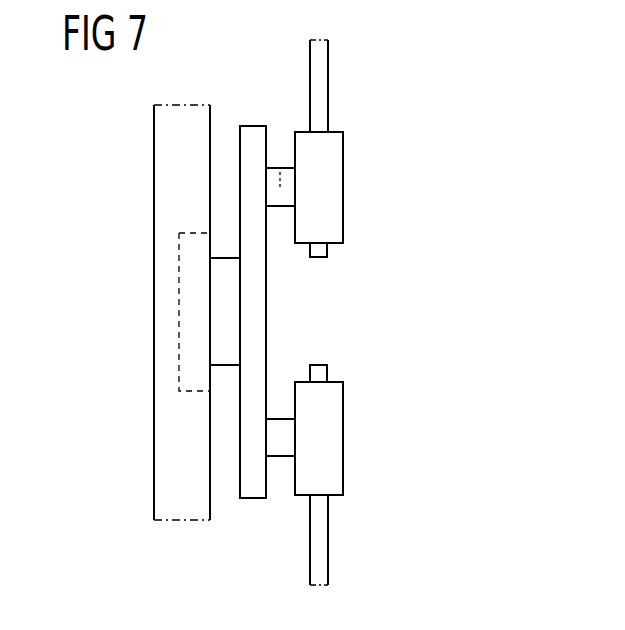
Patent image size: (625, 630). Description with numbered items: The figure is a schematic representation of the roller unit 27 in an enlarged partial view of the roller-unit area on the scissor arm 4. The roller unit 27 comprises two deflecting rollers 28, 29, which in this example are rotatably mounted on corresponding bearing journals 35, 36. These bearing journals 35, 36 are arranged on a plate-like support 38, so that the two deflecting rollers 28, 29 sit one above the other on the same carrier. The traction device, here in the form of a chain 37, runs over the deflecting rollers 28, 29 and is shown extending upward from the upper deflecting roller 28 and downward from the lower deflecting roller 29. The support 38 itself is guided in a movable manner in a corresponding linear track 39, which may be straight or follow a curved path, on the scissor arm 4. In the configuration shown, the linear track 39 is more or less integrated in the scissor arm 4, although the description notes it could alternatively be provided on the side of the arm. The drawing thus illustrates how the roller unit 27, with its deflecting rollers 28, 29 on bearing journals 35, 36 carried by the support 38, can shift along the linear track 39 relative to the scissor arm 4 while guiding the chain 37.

The scissor arm 4 is at (182, 165).
The roller unit 27 is at (375, 292).
The deflecting roller 28 is at (320, 163).
The deflecting roller 29 is at (320, 439).
The bearing journal 35 is at (280, 172).
The bearing journal 36 is at (282, 437).
The chain 37 is at (330, 79).
The plate-like support 38 is at (253, 404).
The linear track 39 is at (190, 277).